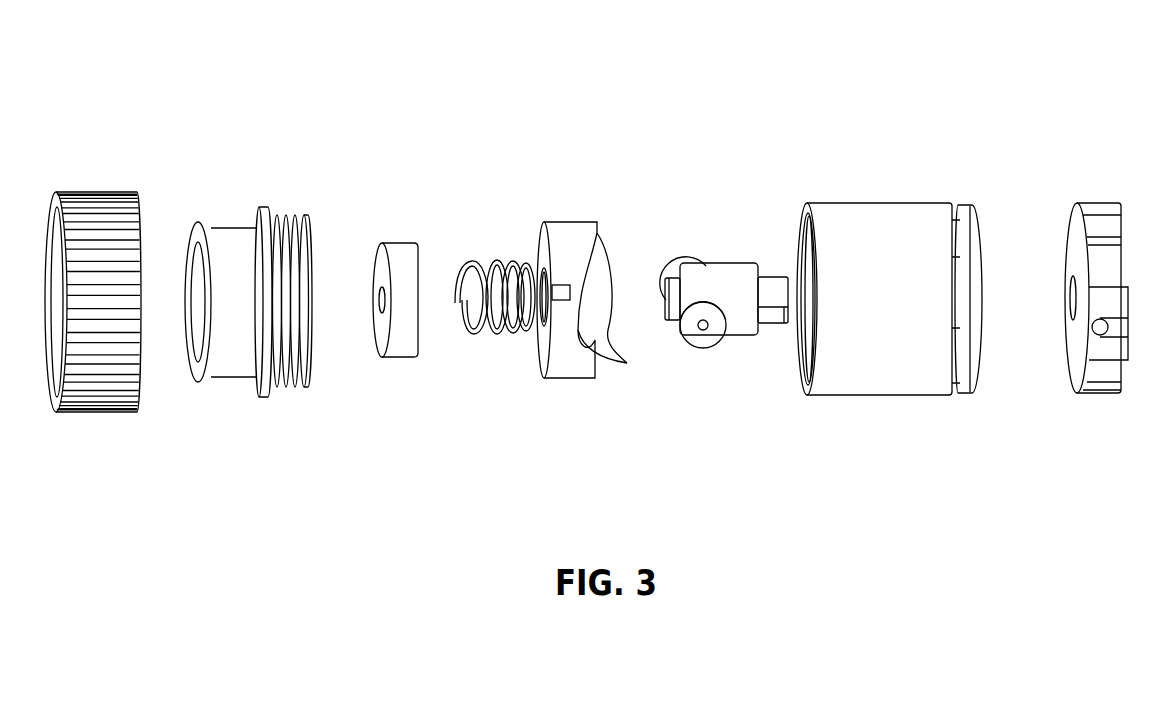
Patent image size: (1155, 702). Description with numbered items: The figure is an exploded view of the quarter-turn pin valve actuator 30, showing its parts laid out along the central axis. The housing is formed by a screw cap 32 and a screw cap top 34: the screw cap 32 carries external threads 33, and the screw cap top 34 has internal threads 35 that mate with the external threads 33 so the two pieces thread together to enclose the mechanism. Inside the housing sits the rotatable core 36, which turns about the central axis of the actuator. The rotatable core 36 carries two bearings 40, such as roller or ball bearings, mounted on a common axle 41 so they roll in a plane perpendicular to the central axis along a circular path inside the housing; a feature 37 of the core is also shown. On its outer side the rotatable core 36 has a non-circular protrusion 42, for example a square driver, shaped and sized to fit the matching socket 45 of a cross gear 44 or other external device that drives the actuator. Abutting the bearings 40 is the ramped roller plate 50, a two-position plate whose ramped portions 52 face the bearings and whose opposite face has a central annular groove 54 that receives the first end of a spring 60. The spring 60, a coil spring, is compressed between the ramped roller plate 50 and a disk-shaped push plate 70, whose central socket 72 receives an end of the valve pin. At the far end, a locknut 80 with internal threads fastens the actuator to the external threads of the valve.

The quarter-turn pin valve actuator 30 is at (390, 107).
The screw cap 32 is at (233, 372).
The external threads 33 is at (300, 222).
The screw cap top 34 is at (900, 396).
The internal threads 35 is at (801, 250).
The rotatable core 36 is at (748, 330).
The valve flange 37 is at (668, 297).
The bearings 40 is at (695, 336).
The common axle 41 is at (703, 330).
The non-circular protrusion 42 is at (775, 283).
The cross gear 44 is at (1078, 396).
The socket 45 is at (1066, 300).
The ramped roller plate 50 is at (560, 380).
The ramped portions 52 is at (612, 343).
The central annular groove 54 is at (530, 280).
The spring 60 is at (500, 333).
The push plate 70 is at (400, 358).
The central socket 72 is at (380, 290).
The locknut 80 is at (90, 412).